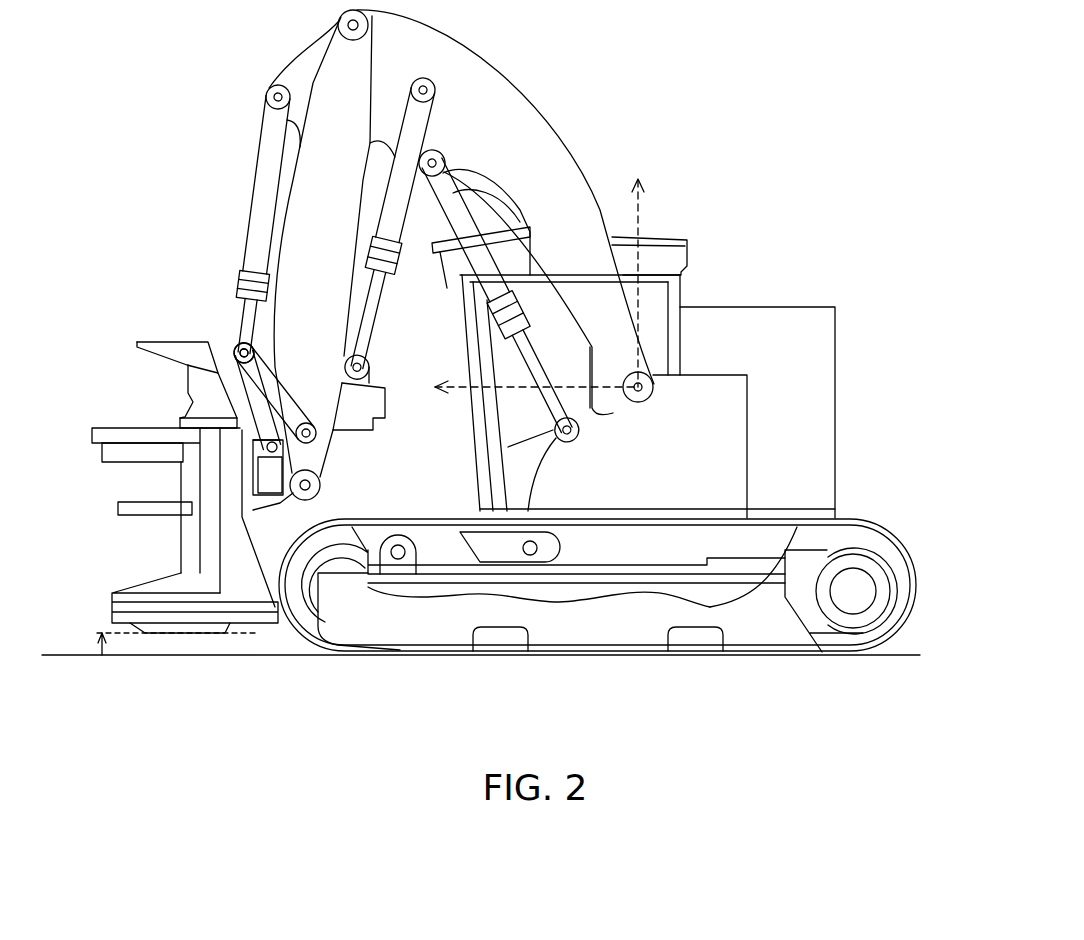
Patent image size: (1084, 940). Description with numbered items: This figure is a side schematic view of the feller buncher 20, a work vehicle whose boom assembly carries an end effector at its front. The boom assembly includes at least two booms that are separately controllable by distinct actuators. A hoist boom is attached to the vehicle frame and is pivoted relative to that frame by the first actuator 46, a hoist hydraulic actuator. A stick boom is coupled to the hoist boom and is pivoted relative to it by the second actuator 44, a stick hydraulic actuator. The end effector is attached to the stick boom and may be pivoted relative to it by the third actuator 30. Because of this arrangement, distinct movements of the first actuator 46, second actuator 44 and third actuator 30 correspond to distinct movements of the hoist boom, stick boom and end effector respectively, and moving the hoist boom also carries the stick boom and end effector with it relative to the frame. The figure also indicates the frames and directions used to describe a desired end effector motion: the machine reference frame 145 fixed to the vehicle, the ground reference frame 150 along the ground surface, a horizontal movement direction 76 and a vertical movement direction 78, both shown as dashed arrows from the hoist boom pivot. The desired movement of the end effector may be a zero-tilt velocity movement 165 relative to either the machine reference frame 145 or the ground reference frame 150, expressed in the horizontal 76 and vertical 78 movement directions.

The feller buncher 20 is at (737, 153).
The third actuator 30 is at (252, 207).
The second actuator 44 is at (380, 308).
The first actuator 46 is at (503, 174).
The horizontal movement direction 76 is at (532, 406).
The vertical movement direction 78 is at (656, 280).
The machine reference frame 145 is at (640, 228).
The ground reference frame 150 is at (501, 679).
The zero-tilt velocity movement 165 is at (151, 642).